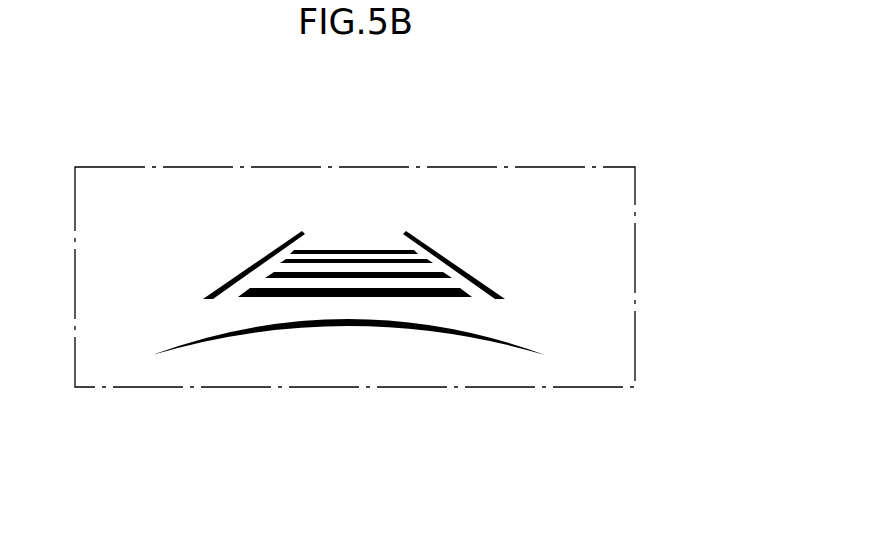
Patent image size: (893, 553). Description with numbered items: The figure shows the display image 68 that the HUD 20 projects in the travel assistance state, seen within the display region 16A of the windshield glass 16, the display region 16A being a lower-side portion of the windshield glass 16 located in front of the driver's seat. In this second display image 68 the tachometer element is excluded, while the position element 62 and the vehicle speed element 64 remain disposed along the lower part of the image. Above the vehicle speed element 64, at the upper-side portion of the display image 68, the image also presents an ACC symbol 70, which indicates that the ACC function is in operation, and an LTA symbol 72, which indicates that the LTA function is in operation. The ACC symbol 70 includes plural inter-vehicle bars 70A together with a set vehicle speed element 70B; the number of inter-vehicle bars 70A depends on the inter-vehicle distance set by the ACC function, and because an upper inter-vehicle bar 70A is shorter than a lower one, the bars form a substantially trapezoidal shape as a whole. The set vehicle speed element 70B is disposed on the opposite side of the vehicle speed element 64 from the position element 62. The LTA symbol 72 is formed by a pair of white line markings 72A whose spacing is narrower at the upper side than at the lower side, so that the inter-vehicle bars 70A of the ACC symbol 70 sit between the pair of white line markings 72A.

The windshield glass 16 is at (173, 438).
The display region 16A is at (85, 390).
The HUD 20 is at (669, 144).
The position element 62 is at (246, 396).
The vehicle speed element 64 is at (348, 396).
The display image 68 is at (566, 160).
The ACC symbol 70 is at (672, 460).
The inter-vehicle bars 70A is at (451, 306).
The set vehicle speed element 70B is at (526, 398).
The LTA symbol 72 is at (354, 201).
The white line markings 72A is at (432, 250).